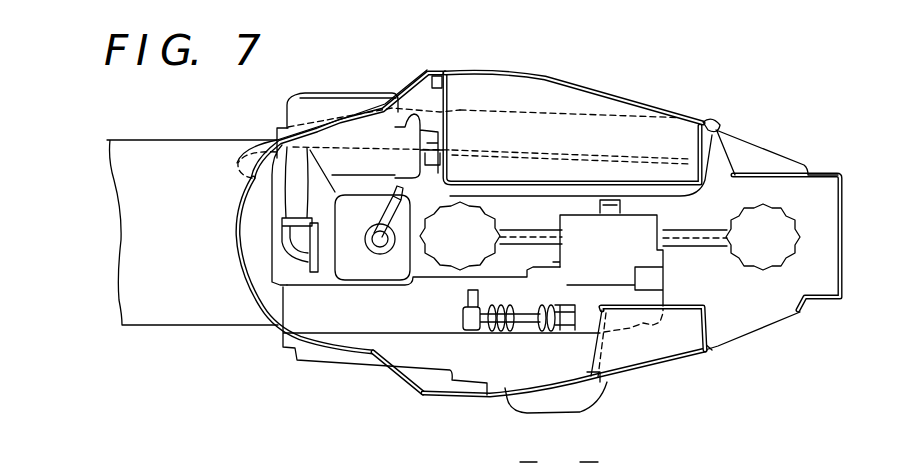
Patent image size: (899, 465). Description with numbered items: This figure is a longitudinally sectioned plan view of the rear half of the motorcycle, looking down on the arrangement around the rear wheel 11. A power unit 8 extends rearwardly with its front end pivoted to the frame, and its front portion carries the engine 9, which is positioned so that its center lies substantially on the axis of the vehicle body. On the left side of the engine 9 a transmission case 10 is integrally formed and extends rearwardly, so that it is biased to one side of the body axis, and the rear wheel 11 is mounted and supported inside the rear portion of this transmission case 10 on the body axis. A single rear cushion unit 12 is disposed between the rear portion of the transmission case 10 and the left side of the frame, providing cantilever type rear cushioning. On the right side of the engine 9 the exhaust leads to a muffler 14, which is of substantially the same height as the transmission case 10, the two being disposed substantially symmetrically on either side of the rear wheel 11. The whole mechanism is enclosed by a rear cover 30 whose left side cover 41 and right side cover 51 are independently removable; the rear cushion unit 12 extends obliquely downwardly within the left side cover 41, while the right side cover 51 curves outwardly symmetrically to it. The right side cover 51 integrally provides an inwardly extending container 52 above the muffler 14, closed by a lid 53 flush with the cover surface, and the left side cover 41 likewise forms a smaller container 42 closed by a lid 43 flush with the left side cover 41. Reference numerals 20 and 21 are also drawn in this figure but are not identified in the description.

The power unit 8 is at (353, 363).
The engine 9 is at (350, 257).
The transmission case 10 is at (518, 377).
The rear wheel 11 is at (780, 243).
The rear cushion unit 12 is at (520, 303).
The muffler 14 is at (710, 150).
The bottom wall 20 is at (590, 462).
The bottom plate 21 is at (530, 462).
The rear cover 30 is at (519, 321).
The left side cover 41 is at (412, 390).
The container 42 is at (680, 338).
The lid 43 is at (643, 372).
The right side cover 51 is at (414, 83).
The container 52 is at (450, 107).
The lid 53 is at (574, 80).